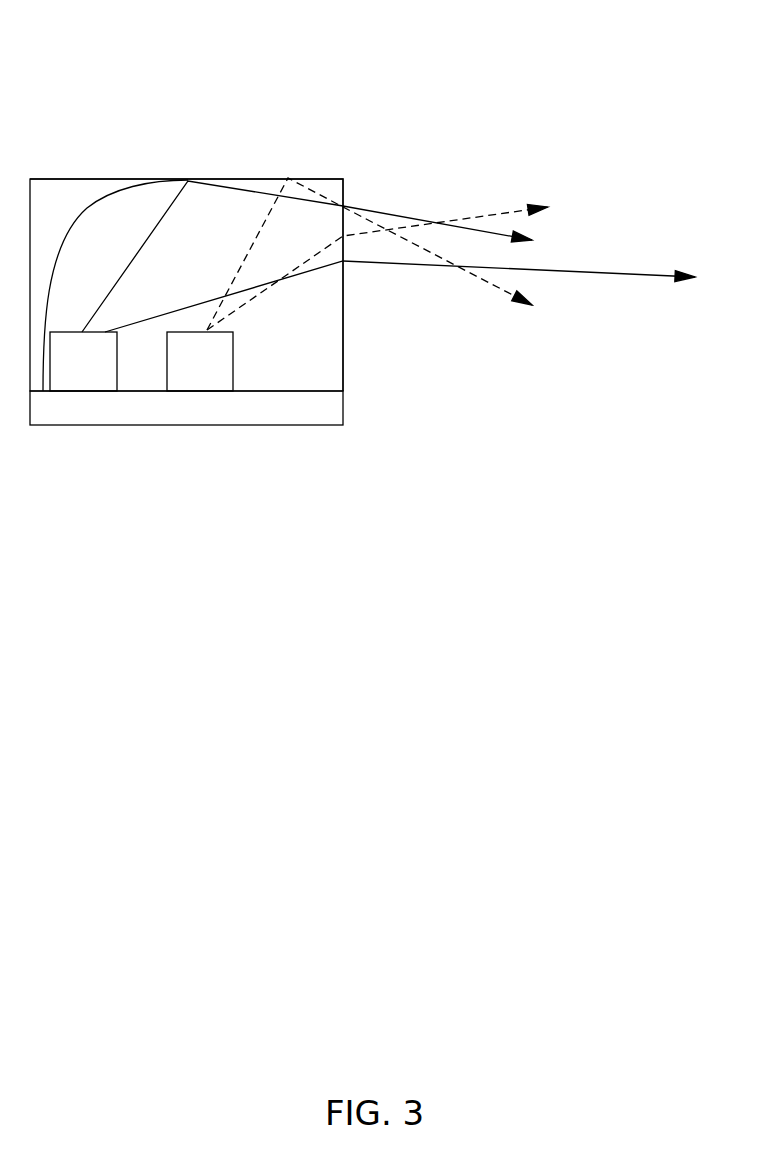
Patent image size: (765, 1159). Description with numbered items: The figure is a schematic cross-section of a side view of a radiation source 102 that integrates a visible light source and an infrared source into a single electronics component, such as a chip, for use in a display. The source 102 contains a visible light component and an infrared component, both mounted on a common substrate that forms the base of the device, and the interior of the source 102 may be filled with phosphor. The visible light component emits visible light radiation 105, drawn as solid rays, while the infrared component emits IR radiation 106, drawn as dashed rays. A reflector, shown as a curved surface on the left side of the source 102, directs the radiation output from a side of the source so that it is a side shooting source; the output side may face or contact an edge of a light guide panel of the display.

The radiation source 102 is at (30, 178).
The visible light radiation 105 is at (647, 273).
The IR radiation 106 is at (492, 213).